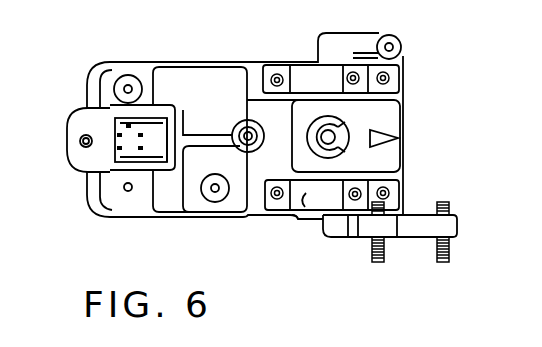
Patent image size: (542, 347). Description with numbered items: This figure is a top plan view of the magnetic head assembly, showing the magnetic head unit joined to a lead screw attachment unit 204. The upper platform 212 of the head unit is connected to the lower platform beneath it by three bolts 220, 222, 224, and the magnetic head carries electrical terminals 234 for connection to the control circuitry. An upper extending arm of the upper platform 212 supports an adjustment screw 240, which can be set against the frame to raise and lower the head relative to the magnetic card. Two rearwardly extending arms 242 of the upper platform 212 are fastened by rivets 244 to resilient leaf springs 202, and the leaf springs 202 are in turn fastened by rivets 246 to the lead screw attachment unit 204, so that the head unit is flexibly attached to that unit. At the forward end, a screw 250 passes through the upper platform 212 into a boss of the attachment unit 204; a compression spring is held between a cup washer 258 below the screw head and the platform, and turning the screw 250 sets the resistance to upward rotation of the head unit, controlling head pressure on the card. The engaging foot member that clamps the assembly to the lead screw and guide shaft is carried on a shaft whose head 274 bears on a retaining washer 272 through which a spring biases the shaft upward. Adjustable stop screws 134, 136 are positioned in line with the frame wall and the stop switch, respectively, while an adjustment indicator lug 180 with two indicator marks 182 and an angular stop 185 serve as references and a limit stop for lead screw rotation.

The adjustable stop screw 134 is at (383, 259).
The adjustable stop screw 136 is at (452, 251).
The adjustment indicator lug 180 is at (305, 216).
The indicator marks 182 is at (323, 193).
The angular stop 185 is at (322, 227).
The resilient leaf springs 202 is at (396, 66).
The lead screw attachment unit 204 is at (392, 102).
The upper platform 212 is at (210, 95).
The bolt 220 is at (126, 87).
The bolt 222 is at (125, 189).
The bolt 224 is at (214, 192).
The electrical terminals 234 is at (118, 133).
The adjustment screw 240 is at (80, 144).
The rearwardly extending arms 242 is at (307, 77).
The rivets 244 is at (275, 76).
The rivets 246 is at (388, 78).
The screw 250 is at (245, 133).
The cup washer 258 is at (243, 145).
The retaining washer 272 is at (338, 150).
The head 274 is at (331, 137).